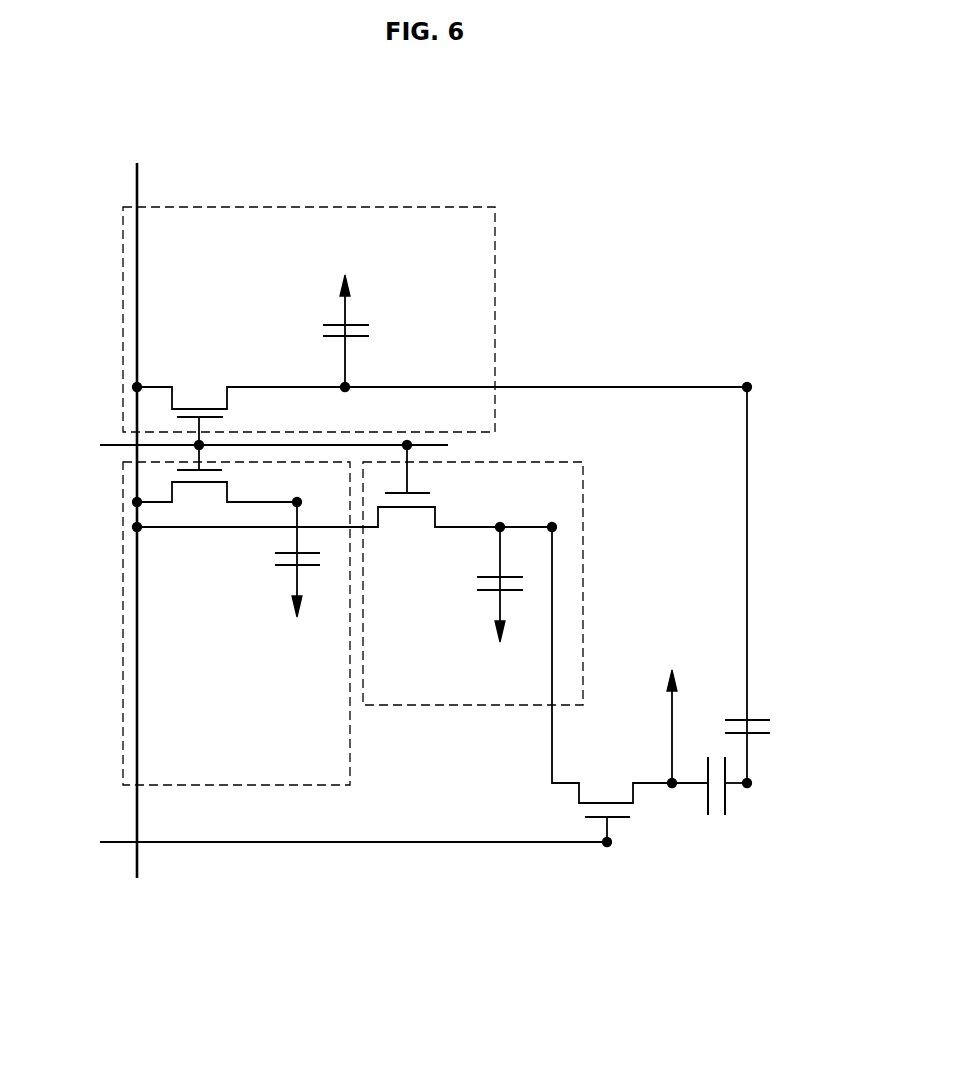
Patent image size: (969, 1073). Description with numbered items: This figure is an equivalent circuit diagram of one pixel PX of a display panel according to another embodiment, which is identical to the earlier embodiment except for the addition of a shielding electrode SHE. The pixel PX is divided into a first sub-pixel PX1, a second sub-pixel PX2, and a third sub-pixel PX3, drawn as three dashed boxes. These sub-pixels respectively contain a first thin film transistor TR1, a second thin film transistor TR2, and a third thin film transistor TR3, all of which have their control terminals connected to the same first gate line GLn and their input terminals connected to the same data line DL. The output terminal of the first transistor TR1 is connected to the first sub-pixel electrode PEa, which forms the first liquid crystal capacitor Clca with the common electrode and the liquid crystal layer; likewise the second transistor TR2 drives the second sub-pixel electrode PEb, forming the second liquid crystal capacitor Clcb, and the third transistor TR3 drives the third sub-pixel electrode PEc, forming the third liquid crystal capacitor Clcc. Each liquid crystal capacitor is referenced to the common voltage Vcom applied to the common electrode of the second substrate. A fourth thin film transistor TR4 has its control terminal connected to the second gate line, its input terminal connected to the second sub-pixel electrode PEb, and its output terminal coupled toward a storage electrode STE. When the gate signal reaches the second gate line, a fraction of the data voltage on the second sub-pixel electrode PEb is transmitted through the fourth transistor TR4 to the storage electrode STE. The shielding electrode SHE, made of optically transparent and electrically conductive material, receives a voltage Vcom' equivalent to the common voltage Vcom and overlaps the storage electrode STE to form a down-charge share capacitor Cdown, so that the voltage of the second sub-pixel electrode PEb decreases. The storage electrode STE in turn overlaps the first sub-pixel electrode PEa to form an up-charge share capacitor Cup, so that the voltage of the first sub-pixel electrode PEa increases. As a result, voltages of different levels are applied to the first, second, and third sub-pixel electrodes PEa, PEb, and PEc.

The data line DL is at (132, 509).
The first gate line GLn is at (245, 445).
The pixel PX is at (585, 201).
The first sub-pixel PX1 is at (305, 207).
The second sub-pixel PX2 is at (457, 706).
The third sub-pixel PX3 is at (228, 787).
The first thin film transistor TR1 is at (239, 413).
The second thin film transistor TR2 is at (343, 489).
The third thin film transistor TR3 is at (215, 479).
The fourth thin film transistor TR4 is at (612, 687).
The first sub-pixel electrode PEa is at (538, 404).
The second sub-pixel electrode PEb is at (518, 513).
The third sub-pixel electrode PEc is at (291, 491).
The first liquid crystal capacitor Clca is at (368, 341).
The second liquid crystal capacitor Clcb is at (475, 576).
The third liquid crystal capacitor Clcc is at (272, 551).
The common voltage Vcom is at (398, 460).
The shielding electrode voltage Vcom' is at (673, 713).
The down-charge share capacitor Cdown is at (763, 888).
The up-charge share capacitor Cup is at (769, 585).
The shielding electrode SHE is at (678, 804).
The storage electrode STE is at (768, 788).